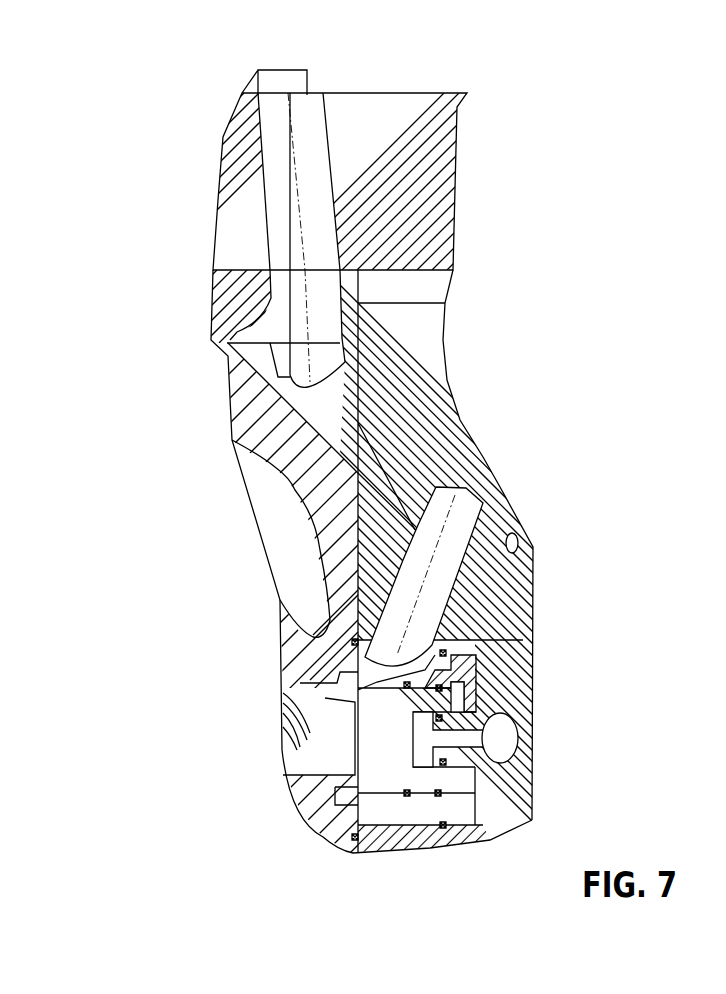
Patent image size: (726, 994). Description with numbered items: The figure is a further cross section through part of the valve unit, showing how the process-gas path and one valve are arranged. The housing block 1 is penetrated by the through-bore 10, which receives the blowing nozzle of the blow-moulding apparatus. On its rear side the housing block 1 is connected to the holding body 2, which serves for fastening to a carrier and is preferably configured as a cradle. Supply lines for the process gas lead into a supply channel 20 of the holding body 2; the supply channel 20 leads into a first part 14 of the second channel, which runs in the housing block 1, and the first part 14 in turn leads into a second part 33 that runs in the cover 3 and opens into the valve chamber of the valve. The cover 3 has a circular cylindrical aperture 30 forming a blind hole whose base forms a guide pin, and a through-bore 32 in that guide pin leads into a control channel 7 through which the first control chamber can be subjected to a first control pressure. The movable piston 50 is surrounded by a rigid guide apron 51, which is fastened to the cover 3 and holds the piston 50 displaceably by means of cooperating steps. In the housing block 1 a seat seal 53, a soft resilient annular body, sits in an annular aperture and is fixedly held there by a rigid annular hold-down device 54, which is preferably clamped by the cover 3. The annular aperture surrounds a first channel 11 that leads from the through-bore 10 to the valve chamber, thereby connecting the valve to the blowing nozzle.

The housing block 1 is at (223, 383).
The holding body 2 is at (413, 118).
The cover 3 is at (432, 348).
The control channel 7 is at (503, 743).
The through-bore 10 is at (268, 498).
The first channel 11 is at (330, 750).
The first part of the second channel 14 is at (255, 352).
The supply channel 20 is at (297, 177).
The aperture 30 is at (402, 825).
The through-bore 32 is at (470, 737).
The second part of the second channel 33 is at (472, 522).
The piston 50 is at (360, 830).
The guide apron 51 is at (451, 662).
The seat seal 53 is at (360, 687).
The hold-down device 54 is at (350, 655).